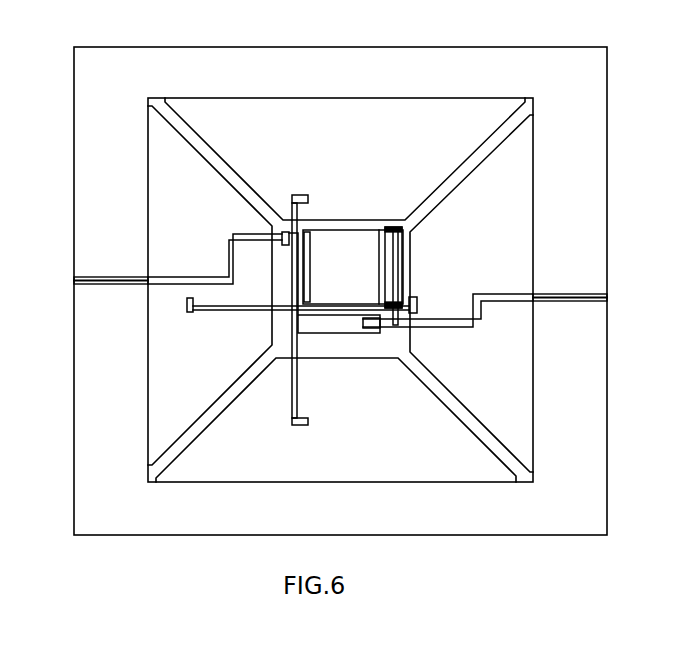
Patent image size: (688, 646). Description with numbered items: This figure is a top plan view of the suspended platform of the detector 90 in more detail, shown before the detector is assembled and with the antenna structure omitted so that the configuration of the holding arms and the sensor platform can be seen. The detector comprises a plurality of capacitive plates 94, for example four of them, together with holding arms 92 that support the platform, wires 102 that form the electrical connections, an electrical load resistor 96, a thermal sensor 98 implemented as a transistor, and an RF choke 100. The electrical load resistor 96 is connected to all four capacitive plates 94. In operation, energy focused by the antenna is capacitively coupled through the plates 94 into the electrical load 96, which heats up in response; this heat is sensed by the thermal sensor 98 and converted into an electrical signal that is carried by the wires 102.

The sensor device 90 is at (136, 549).
The holding arms 92 is at (102, 276).
The capacitive plates 94 is at (505, 410).
The electrical load resistor 96 is at (283, 312).
The thermal sensor 98 is at (347, 229).
The RF choke 100 is at (338, 333).
The wires 102 is at (173, 285).